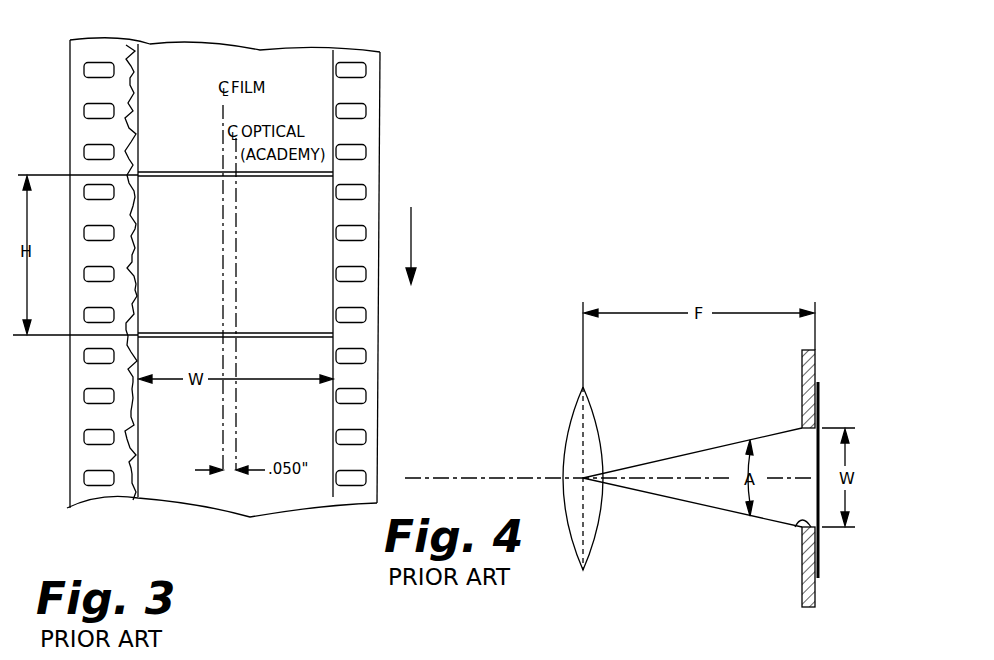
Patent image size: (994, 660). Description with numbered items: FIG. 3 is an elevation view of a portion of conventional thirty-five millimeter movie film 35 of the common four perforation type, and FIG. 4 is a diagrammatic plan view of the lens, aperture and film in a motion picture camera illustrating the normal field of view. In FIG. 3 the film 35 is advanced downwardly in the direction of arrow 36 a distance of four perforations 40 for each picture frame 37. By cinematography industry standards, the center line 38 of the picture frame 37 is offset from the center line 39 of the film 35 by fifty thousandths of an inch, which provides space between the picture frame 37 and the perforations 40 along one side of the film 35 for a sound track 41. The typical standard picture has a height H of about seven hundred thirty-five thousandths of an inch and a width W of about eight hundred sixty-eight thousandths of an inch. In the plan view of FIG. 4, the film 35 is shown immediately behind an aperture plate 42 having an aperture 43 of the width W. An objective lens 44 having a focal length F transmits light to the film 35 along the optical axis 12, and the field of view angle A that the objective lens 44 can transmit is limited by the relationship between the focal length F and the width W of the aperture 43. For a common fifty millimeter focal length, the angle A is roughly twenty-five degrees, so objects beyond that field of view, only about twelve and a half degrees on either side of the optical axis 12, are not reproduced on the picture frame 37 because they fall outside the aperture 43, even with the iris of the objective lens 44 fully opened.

In FIG. 4, the optical axis 12 is at (499, 477).
In FIG. 3, the movie film 35 is at (382, 90).
In FIG. 4, the movie film 35 is at (820, 400).
In FIG. 3, the arrow 36 is at (413, 228).
In FIG. 3, the picture frame 37 is at (296, 220).
In FIG. 3, the center line of the picture frame 38 is at (236, 278).
In FIG. 3, the center line of the film 39 is at (222, 252).
In FIG. 3, the perforations 40 is at (99, 485).
In FIG. 3, the sound track 41 is at (131, 410).
In FIG. 4, the aperture plate 42 is at (800, 583).
In FIG. 4, the aperture 43 is at (800, 524).
In FIG. 4, the objective lens 44 is at (591, 552).